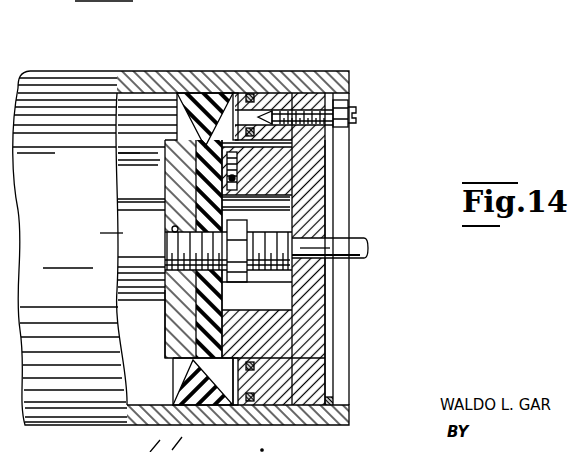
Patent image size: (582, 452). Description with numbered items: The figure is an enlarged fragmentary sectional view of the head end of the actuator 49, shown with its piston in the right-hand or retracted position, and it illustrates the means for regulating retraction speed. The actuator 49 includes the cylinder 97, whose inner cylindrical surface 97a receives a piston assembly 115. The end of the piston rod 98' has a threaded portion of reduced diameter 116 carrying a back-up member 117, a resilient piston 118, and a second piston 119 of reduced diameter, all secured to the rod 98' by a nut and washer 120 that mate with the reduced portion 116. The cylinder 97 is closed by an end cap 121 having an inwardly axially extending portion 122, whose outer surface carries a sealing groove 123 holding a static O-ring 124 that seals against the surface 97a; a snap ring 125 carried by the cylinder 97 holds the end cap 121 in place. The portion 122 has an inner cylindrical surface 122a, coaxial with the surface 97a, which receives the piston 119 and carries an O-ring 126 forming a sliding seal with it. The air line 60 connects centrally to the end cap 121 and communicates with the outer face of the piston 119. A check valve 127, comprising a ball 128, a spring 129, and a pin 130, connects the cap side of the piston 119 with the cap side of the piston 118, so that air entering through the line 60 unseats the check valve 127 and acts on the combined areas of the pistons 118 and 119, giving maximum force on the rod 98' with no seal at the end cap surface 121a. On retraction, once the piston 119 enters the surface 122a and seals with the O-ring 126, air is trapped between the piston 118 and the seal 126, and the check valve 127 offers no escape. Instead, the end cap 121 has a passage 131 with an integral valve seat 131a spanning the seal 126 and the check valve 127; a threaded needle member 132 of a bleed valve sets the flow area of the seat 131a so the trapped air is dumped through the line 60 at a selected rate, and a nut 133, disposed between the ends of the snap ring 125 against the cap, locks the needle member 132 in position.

The actuator 49 is at (83, 85).
The inner cylindrical surface 97a is at (148, 100).
The cylinder 97 is at (209, 75).
The O-ring 126 is at (242, 125).
The static O-ring 124 is at (252, 94).
The sealing groove 123 is at (266, 104).
The valve seat 131a is at (285, 112).
The passage 131 is at (296, 114).
The snap ring 125 is at (350, 72).
The needle member 132 is at (343, 118).
The nut 133 is at (358, 122).
The piston assembly 115 is at (138, 153).
The pin 130 is at (200, 130).
The ball 128 is at (197, 192).
The piston rod 98' is at (85, 225).
The portion of reduced diameter 116 is at (170, 231).
The back-up member 117 is at (172, 330).
The resilient piston 118 is at (193, 378).
The spring 129 is at (238, 160).
The check valve 127 is at (243, 170).
The nut and washer 120 is at (247, 221).
The end cap surface 121a is at (315, 165).
The end cap 121 is at (320, 190).
The air line 60 is at (366, 243).
The second piston 119 is at (240, 300).
The inner cylindrical surface 122a is at (285, 345).
The inwardly axially extending portion 122 is at (272, 383).